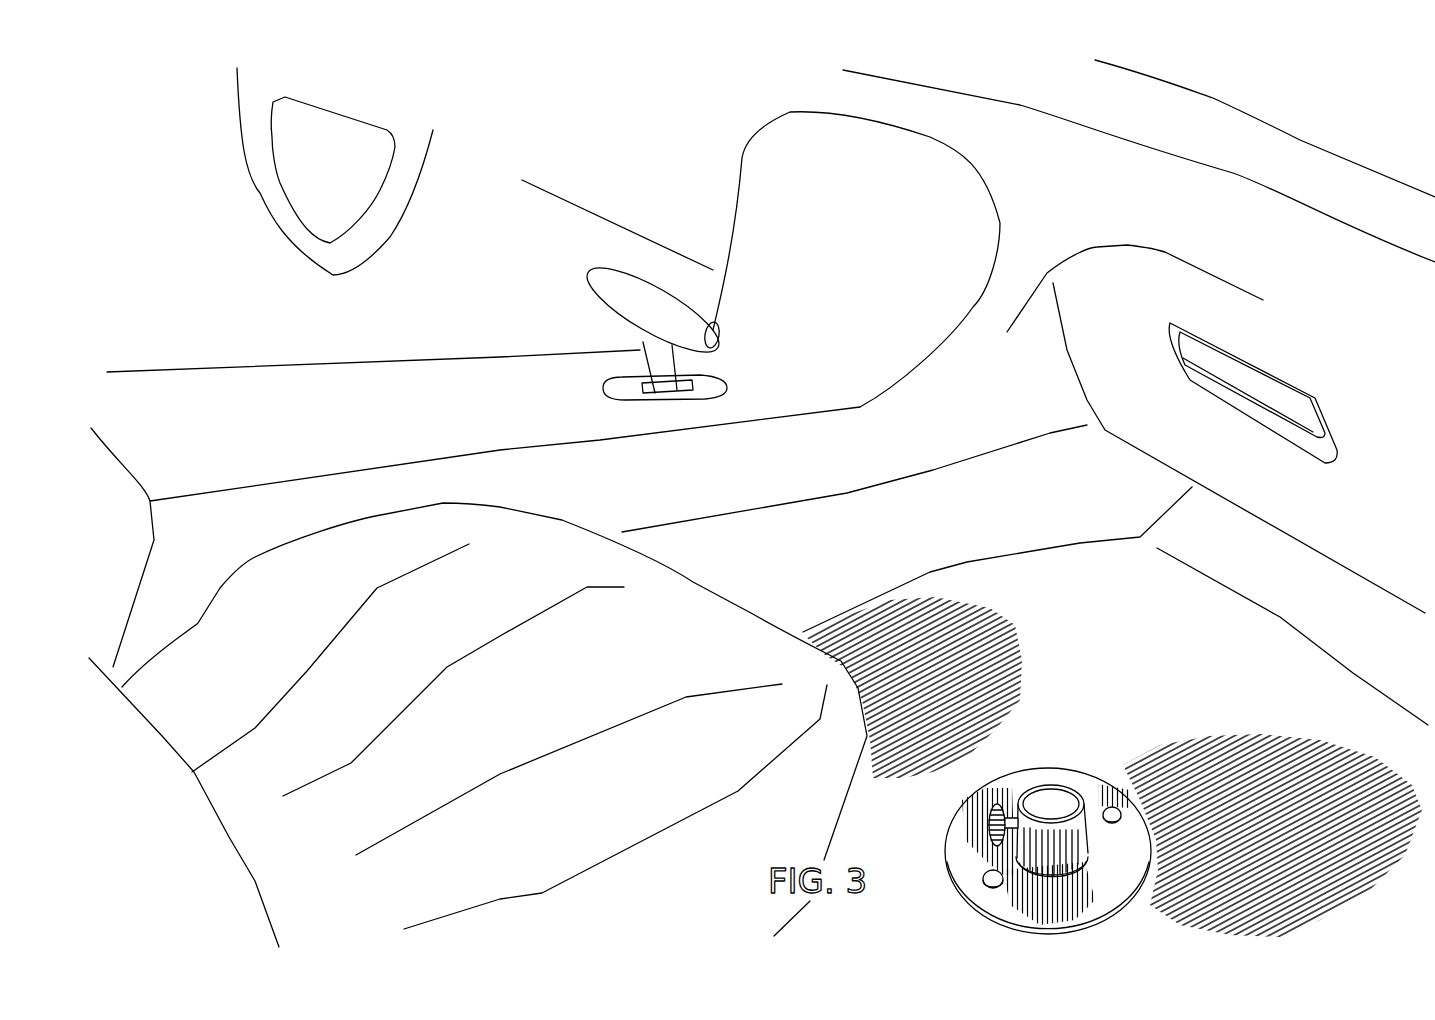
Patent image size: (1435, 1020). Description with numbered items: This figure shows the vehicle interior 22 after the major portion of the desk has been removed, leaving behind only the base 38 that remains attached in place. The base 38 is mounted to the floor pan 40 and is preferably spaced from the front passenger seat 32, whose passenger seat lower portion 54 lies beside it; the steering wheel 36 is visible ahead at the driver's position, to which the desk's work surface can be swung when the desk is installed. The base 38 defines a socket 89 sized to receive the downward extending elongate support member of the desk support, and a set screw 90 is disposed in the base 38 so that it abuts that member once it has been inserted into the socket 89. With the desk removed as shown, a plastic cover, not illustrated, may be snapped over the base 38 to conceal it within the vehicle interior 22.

The vehicle interior 22 is at (910, 544).
The front passenger seat 32 is at (200, 867).
The steering wheel 36 is at (293, 242).
The base 38 is at (1018, 780).
The floor pan 40 is at (1278, 819).
The passenger seat lower portion 54 is at (708, 633).
The socket 89 is at (1063, 800).
The set screw 90 is at (990, 817).